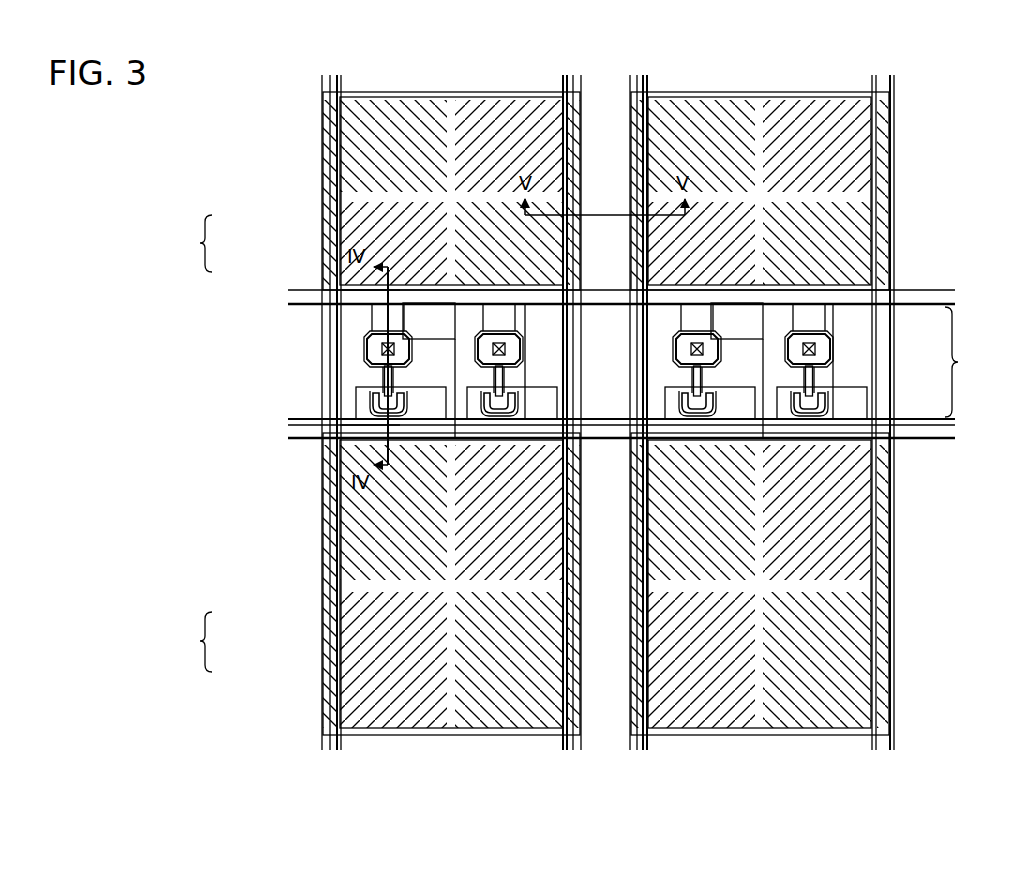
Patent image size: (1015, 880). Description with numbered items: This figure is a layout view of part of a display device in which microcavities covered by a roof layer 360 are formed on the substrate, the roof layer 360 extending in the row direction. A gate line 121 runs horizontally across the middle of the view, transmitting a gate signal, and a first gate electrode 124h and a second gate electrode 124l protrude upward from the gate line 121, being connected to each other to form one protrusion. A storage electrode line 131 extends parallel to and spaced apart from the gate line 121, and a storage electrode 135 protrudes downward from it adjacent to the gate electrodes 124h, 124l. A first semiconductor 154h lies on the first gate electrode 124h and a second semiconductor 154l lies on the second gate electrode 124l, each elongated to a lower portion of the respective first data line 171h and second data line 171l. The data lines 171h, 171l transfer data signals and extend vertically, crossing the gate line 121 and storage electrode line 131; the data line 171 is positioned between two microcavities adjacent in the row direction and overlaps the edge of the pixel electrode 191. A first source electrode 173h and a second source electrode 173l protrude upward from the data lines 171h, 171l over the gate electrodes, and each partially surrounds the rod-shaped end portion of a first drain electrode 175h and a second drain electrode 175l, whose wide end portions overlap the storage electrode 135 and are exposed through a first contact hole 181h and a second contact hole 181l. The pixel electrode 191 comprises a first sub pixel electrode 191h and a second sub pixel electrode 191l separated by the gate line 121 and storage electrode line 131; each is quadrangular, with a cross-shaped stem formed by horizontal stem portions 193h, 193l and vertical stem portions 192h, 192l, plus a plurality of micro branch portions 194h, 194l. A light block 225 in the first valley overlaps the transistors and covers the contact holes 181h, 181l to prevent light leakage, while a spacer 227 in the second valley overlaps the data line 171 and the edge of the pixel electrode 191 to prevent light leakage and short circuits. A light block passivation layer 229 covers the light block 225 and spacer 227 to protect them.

The gate line 121 is at (926, 440).
The storage electrode line 131 is at (912, 290).
The storage electrode 135 is at (828, 314).
The roof layer 360 is at (968, 362).
The data line 171 is at (188, 243).
The first data line 171h is at (337, 134).
The second data line 171l is at (892, 217).
The first source electrode 173h is at (376, 400).
The second source electrode 173l is at (788, 400).
The first drain electrode 175h is at (386, 380).
The second drain electrode 175l is at (815, 380).
The first gate electrode 124h is at (356, 392).
The second gate electrode 124l is at (838, 390).
The first semiconductor 154h is at (389, 412).
The second semiconductor 154l is at (818, 412).
The first contact hole 181h is at (383, 348).
The second contact hole 181l is at (834, 348).
The pixel electrode 191 is at (188, 642).
The first sub pixel electrode 191h is at (760, 95).
The second sub pixel electrode 191l is at (765, 735).
The vertical stem portion 192h is at (453, 125).
The vertical stem portion 192l is at (453, 705).
The horizontal stem portion 193h is at (868, 188).
The horizontal stem portion 193l is at (848, 582).
The micro branch portions 194h is at (375, 165).
The micro branch portions 194l is at (377, 560).
The light block 225 is at (365, 297).
The spacer 227 is at (585, 100).
The light block passivation layer 229 is at (552, 120).